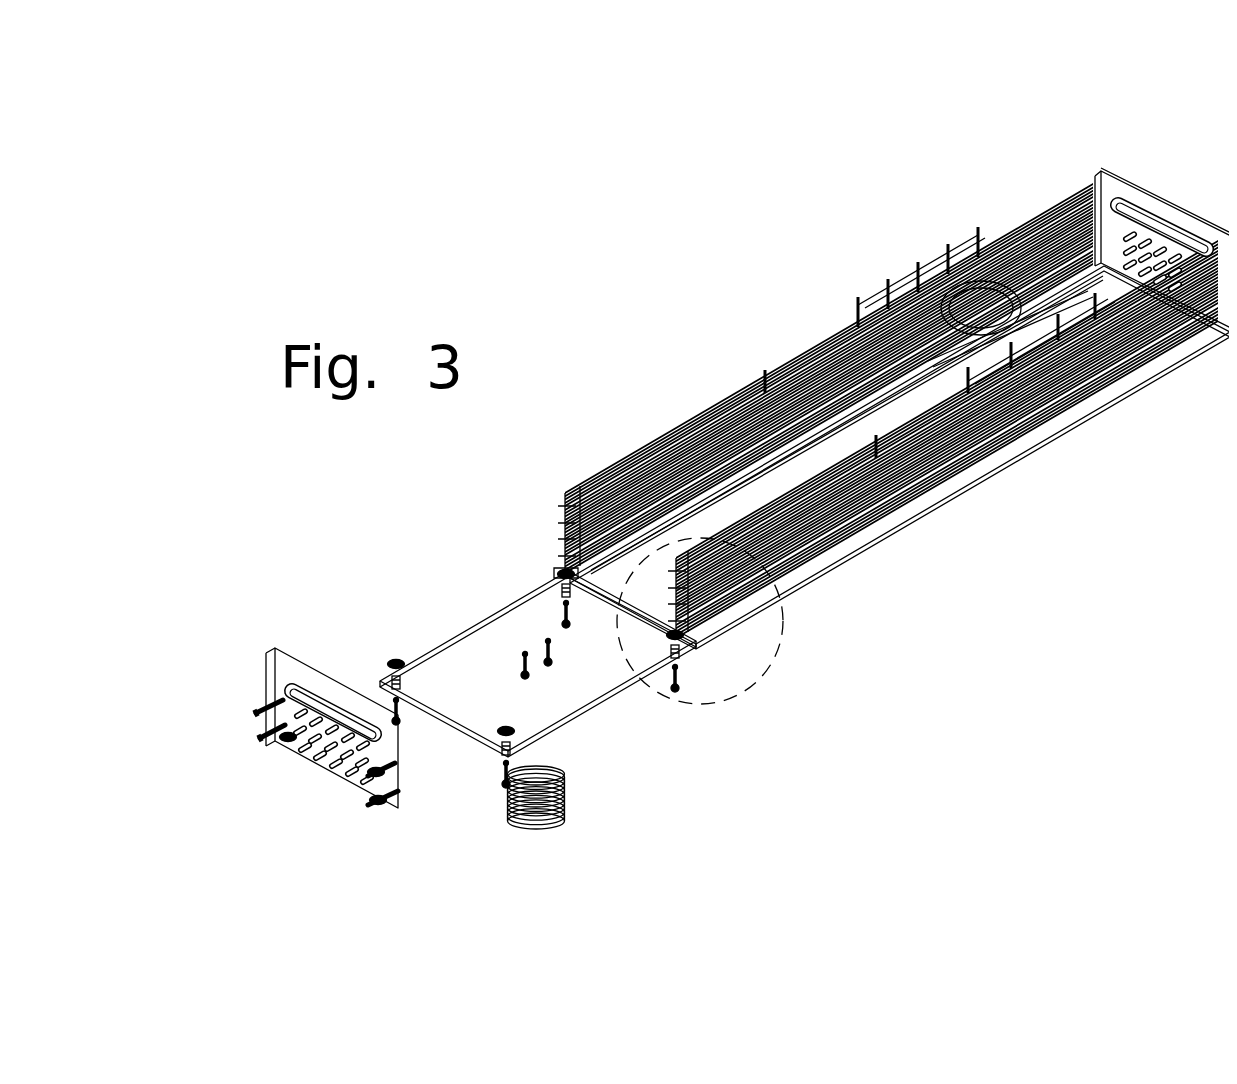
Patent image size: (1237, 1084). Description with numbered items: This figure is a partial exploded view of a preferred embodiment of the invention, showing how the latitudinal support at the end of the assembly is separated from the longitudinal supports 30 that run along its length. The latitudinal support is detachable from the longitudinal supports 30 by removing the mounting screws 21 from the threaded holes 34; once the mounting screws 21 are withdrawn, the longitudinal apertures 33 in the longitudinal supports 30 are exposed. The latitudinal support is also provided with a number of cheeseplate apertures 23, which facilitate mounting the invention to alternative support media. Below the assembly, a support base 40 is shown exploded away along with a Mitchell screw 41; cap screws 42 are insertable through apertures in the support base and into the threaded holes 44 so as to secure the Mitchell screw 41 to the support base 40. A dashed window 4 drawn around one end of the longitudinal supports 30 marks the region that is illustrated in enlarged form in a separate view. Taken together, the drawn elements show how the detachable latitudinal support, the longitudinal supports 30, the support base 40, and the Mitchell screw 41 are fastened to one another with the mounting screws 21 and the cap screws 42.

The window 4 is at (758, 660).
The mounting screws 21 is at (272, 723).
The cheeseplate apertures 23 is at (278, 727).
The longitudinal supports 30 is at (932, 468).
The longitudinal apertures 33 is at (557, 514).
The threaded holes 34 is at (555, 560).
The support base 40 is at (457, 727).
The Mitchell screw 41 is at (557, 793).
The cap screws 42 is at (543, 636).
The threaded holes 44 is at (527, 762).